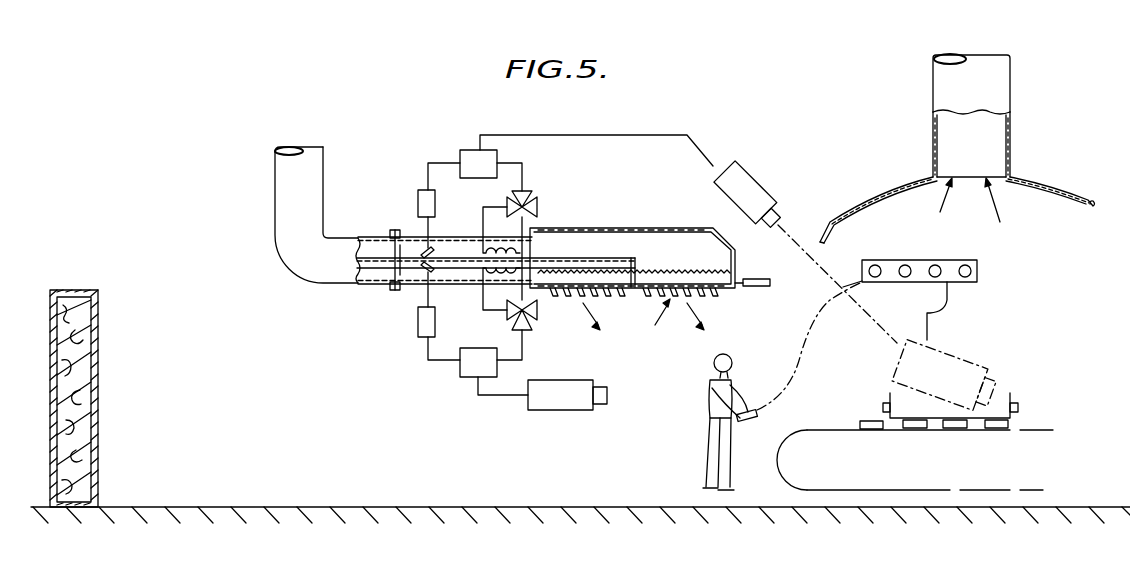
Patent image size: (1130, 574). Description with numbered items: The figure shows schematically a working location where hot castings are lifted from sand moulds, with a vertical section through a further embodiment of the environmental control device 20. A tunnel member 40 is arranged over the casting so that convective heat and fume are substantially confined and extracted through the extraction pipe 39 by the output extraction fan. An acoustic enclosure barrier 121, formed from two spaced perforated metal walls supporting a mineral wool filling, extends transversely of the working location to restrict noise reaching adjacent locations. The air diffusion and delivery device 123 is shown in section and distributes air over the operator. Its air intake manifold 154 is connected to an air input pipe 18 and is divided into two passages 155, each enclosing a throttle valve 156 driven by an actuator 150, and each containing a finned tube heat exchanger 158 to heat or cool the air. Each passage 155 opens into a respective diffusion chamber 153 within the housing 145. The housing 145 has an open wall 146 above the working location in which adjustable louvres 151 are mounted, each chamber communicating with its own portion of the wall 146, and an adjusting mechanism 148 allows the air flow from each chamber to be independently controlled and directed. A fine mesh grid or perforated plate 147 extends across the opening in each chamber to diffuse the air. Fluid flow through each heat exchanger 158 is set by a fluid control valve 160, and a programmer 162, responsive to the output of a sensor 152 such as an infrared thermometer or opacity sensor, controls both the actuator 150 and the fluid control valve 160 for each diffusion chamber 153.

The air input pipe 18 is at (275, 182).
The environmental control device 20 is at (681, 208).
The extraction pipe 39 is at (931, 98).
The tunnel member 40 is at (858, 192).
The acoustic enclosure barrier 121 is at (98, 432).
The air diffusion and delivery device 123 is at (646, 327).
The housing 145 is at (617, 228).
The wall 146 is at (712, 295).
The fine mesh grid or perforated plate 147 is at (655, 268).
The adjusting mechanism 148 is at (762, 279).
The actuator 150 is at (418, 192).
The adjustable louvres 151 is at (652, 292).
The sensor 152 is at (767, 190).
The diffusion chamber 153 is at (677, 243).
The air intake manifold 154 is at (414, 236).
The passage 155 is at (393, 252).
The throttle valve 156 is at (420, 268).
The heat exchanger 158 is at (490, 238).
The fluid control valve 160 is at (536, 205).
The programmer 162 is at (473, 150).